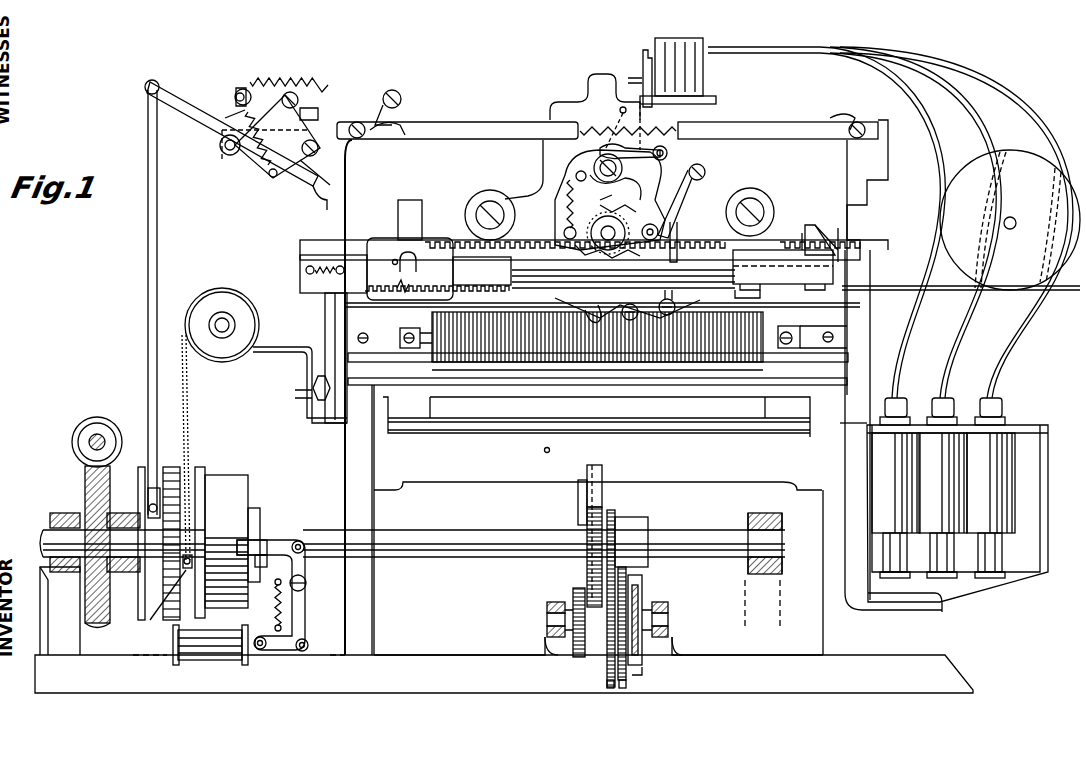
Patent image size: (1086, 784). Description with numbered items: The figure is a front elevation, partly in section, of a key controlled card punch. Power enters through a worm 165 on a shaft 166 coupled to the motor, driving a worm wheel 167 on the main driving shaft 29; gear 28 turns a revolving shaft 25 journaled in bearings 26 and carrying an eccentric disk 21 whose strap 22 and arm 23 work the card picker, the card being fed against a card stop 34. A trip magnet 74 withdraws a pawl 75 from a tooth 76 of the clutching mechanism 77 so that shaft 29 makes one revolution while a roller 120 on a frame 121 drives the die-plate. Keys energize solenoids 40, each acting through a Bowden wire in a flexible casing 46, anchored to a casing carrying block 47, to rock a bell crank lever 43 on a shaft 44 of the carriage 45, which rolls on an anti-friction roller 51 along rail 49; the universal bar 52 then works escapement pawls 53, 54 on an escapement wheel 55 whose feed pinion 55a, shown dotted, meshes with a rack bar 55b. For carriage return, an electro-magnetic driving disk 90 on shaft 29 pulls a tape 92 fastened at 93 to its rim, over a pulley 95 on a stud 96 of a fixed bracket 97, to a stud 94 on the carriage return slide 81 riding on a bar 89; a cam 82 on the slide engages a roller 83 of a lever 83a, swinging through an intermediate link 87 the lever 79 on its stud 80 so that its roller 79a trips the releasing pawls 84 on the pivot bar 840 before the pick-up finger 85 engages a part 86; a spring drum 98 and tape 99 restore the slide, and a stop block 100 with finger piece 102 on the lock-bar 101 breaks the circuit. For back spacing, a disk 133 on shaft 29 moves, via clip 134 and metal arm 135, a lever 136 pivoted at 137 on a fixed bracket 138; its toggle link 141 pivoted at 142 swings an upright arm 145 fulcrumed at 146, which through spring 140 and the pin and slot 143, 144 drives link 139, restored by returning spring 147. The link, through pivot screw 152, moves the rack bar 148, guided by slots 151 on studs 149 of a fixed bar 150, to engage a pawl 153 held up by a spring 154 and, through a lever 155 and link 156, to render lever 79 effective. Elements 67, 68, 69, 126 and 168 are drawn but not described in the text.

The eccentric disk 21 is at (642, 662).
The strap 22 is at (645, 678).
The arm 23 is at (642, 590).
The revolving shaft 25 is at (670, 616).
The bearings 26 is at (547, 637).
The gear 28 is at (605, 695).
The main driving shaft 29 is at (490, 531).
The card stop 34 is at (943, 600).
The solenoids 40 is at (943, 488).
The bell crank lever 43 is at (643, 52).
The shaft 44 is at (668, 152).
The carriage 45 is at (600, 200).
The flexible casing 46 is at (900, 358).
The casing carrying block 47 is at (678, 48).
The rail 49 is at (352, 242).
The anti-friction roller 51 is at (475, 209).
The universal bar 52 is at (630, 70).
The escapement pawl 53 is at (576, 176).
The escapement pawl 54 is at (616, 168).
The escapement wheel 55 is at (618, 214).
The feed pinion 55a is at (612, 200).
The rack bar 55b is at (805, 236).
The pinion 67 is at (573, 650).
The gear 68 is at (606, 660).
The gear 69 is at (584, 596).
The trip magnet 74 is at (212, 655).
The pawl 75 is at (276, 540).
The tooth 76 is at (244, 538).
The clutching mechanism 77 is at (231, 484).
The lever 79 is at (600, 306).
The roller 79a is at (570, 306).
The stud 80 is at (672, 303).
The carriage return slide 81 is at (783, 270).
The cam 82 is at (828, 237).
The roller 83 is at (650, 224).
The lever 83a is at (566, 228).
The releasing pawls 84 is at (755, 352).
The pivot bar 840 is at (770, 334).
The pick-up finger 85 is at (815, 225).
The part 86 is at (602, 226).
The intermediate link 87 is at (678, 236).
The bar 89 is at (602, 298).
The electro-magnetic driving disk 90 is at (202, 470).
The tape 92 is at (191, 412).
The fastening point 93 is at (166, 595).
The stud 94 is at (747, 301).
The pulley 95 is at (222, 325).
The stud 96 is at (230, 325).
The fixed bracket 97 is at (307, 372).
The spring drum 98 is at (1010, 220).
The tape 99 is at (950, 288).
The stop block 100 is at (410, 269).
The lock-bar 101 is at (438, 274).
The finger piece 102 is at (398, 210).
The roller 120 is at (598, 524).
The frame 121 is at (578, 498).
The shaft 126 is at (624, 690).
The disk 133 is at (163, 600).
The clip 134 is at (148, 496).
The metal arm 135 is at (163, 270).
The lever 136 is at (200, 110).
The pivot 137 is at (277, 136).
The fixed bracket 138 is at (306, 185).
The link 139 is at (320, 95).
The spring 140 is at (282, 73).
The toggle link 141 is at (270, 104).
The pivot 142 is at (316, 116).
The pin 143 is at (236, 92).
The slot 144 is at (232, 91).
The upright arm 145 is at (222, 117).
The fulcrum 146 is at (259, 153).
The returning spring 147 is at (262, 168).
The rack bar 148 is at (595, 97).
The studs 149 is at (378, 136).
The fixed bar 150 is at (490, 133).
The slots 151 is at (400, 122).
The pivot screw 152 is at (394, 98).
The pawl 153 is at (619, 149).
The spring 154 is at (616, 124).
The lever 155 is at (708, 166).
The link 156 is at (678, 210).
The worm 165 is at (72, 440).
The shaft 166 is at (100, 432).
The worm wheel 167 is at (85, 492).
The pawl 168 is at (607, 255).